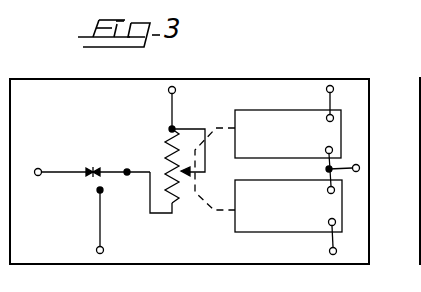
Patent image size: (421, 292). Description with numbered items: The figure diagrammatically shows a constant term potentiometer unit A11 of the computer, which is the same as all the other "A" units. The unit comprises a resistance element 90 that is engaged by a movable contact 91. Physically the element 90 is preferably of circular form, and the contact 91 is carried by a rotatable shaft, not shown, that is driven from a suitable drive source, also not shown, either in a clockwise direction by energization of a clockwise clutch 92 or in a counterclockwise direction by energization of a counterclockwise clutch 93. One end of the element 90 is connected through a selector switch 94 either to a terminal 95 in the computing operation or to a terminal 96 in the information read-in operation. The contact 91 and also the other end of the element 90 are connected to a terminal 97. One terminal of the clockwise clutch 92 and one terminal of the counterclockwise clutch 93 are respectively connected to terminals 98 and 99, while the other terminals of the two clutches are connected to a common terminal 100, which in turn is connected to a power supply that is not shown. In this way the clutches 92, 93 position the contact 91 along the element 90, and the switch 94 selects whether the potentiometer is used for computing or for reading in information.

The potentiometer unit A11 is at (243, 80).
The resistance element 90 is at (159, 166).
The movable contact 91 is at (185, 174).
The clockwise clutch 92 is at (258, 110).
The counterclockwise clutch 93 is at (288, 218).
The selector switch 94 is at (109, 172).
The terminal 95 is at (40, 168).
The terminal 96 is at (103, 248).
The terminal 97 is at (176, 90).
The terminal 98 is at (334, 90).
The terminal 99 is at (346, 265).
The terminal 100 is at (360, 168).